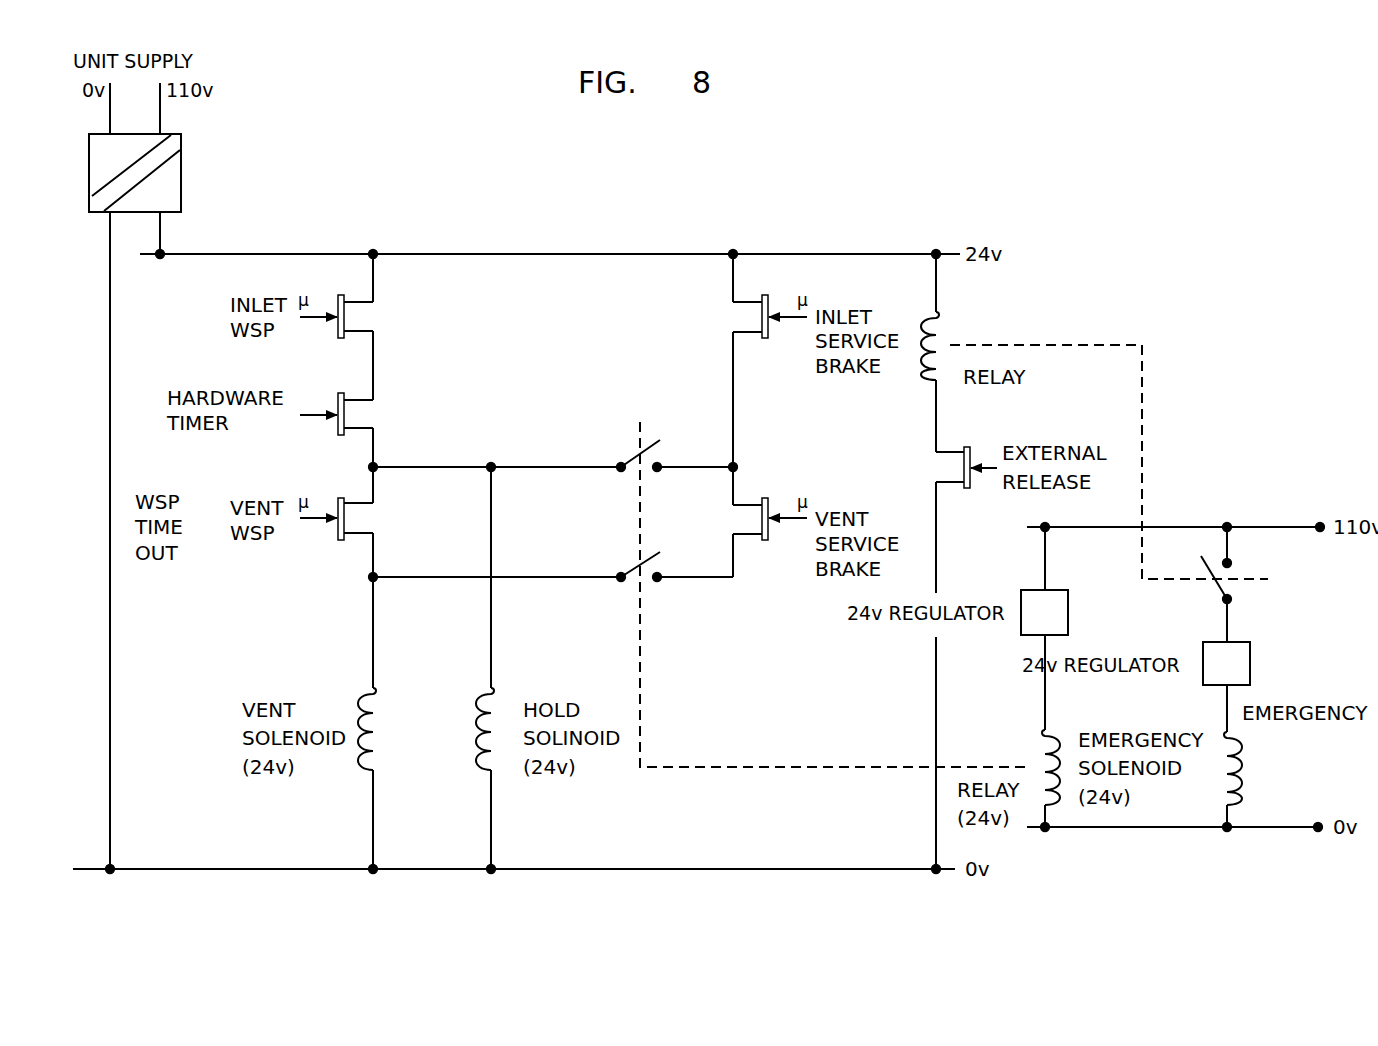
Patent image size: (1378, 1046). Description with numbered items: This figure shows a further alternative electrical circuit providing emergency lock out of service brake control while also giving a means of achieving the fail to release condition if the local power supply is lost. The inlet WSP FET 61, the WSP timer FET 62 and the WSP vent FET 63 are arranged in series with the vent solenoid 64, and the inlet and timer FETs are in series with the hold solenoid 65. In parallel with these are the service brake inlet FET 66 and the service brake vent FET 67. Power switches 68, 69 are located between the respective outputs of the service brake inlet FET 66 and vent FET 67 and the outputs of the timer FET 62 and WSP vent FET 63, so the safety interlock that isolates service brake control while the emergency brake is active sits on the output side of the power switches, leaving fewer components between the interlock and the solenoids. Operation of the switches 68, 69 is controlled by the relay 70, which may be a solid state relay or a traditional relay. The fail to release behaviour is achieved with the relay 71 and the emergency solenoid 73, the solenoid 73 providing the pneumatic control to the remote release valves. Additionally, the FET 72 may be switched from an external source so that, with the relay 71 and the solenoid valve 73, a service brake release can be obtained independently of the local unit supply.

The inlet WSP FET 61 is at (378, 313).
The WSP timer FET 62 is at (378, 412).
The WSP vent FET 63 is at (378, 515).
The vent solenoid 64 is at (378, 730).
The hold solenoid 65 is at (478, 727).
The service brake inlet FET 66 is at (734, 318).
The service brake vent FET 67 is at (734, 520).
The power switch 68 is at (618, 450).
The power switch 69 is at (655, 590).
The relay 70 is at (1030, 732).
The relay 71 is at (945, 314).
The FET 72 is at (935, 470).
The emergency solenoid 73 is at (1243, 766).